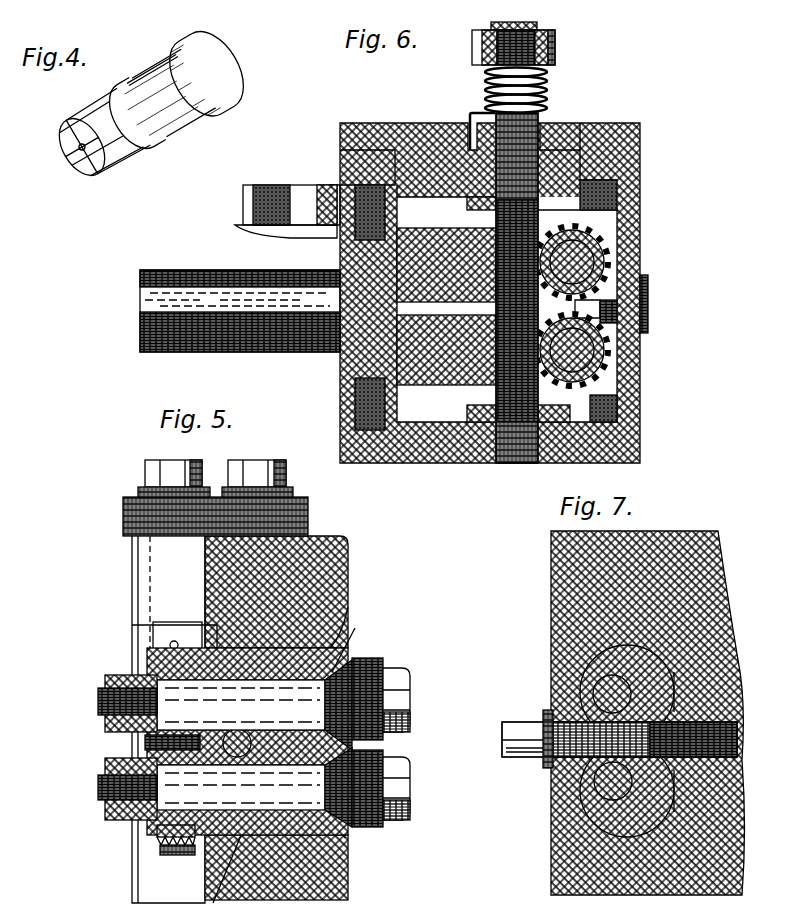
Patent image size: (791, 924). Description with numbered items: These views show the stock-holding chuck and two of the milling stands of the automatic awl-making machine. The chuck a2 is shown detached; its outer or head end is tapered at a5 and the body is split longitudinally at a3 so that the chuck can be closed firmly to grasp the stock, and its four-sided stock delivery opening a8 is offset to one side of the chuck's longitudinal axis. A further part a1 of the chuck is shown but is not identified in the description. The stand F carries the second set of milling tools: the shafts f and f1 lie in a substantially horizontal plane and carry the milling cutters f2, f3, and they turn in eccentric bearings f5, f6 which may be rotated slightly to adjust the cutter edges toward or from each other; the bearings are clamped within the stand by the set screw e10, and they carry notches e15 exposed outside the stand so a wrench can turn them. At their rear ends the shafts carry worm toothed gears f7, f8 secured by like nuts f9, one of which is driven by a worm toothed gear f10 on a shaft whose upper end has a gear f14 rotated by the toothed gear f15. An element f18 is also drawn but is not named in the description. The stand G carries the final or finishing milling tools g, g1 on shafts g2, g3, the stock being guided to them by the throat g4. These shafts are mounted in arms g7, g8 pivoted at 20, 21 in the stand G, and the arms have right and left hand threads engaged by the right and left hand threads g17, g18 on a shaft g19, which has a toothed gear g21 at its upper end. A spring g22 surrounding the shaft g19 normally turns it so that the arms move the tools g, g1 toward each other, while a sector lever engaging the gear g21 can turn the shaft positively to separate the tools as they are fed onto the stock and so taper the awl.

In FIG. 4, the collet head a1 is at (240, 68).
In FIG. 4, the chuck a2 is at (85, 102).
In FIG. 4, the longitudinal split a3 is at (97, 103).
In FIG. 4, the tapered head end a5 is at (115, 157).
In FIG. 4, the stock delivery opening a8 is at (67, 163).
In FIG. 6, the stand G is at (438, 124).
In FIG. 6, the milling tool g is at (612, 283).
In FIG. 6, the milling tool g1 is at (617, 323).
In FIG. 6, the shaft g2 is at (607, 248).
In FIG. 6, the shaft g3 is at (597, 348).
In FIG. 6, the throat g4 is at (628, 300).
In FIG. 6, the arm g7 is at (430, 232).
In FIG. 6, the arm g8 is at (446, 365).
In FIG. 6, the right hand thread g17 is at (481, 213).
In FIG. 6, the left hand thread g18 is at (516, 403).
In FIG. 6, the shaft g19 is at (527, 145).
In FIG. 6, the toothed gear g21 is at (557, 42).
In FIG. 6, the spring g22 is at (547, 88).
In FIG. 6, the pivot 20 is at (342, 264).
In FIG. 6, the pivot 21 is at (343, 370).
In FIG. 5, the stand F is at (355, 552).
In FIG. 7, the stand F is at (558, 578).
In FIG. 5, the shaft f is at (348, 853).
In FIG. 7, the shaft f is at (590, 790).
In FIG. 5, the shaft f1 is at (100, 710).
In FIG. 7, the shaft f1 is at (590, 667).
In FIG. 5, the milling cutter f2 is at (372, 663).
In FIG. 5, the milling cutter f3 is at (380, 823).
In FIG. 5, the eccentric bearing f5 is at (157, 672).
In FIG. 7, the eccentric bearing f5 is at (580, 677).
In FIG. 5, the eccentric bearing f6 is at (213, 903).
In FIG. 7, the eccentric bearing f6 is at (598, 800).
In FIG. 5, the worm toothed gear f7 is at (160, 653).
In FIG. 5, the worm toothed gear f8 is at (160, 825).
In FIG. 5, the nut f9 is at (105, 677).
In FIG. 5, the worm toothed gear f10 is at (123, 735).
In FIG. 5, the gear f14 is at (127, 497).
In FIG. 5, the toothed gear f15 is at (307, 517).
In FIG. 5, the ratchet f18 is at (105, 820).
In FIG. 5, the set screw e10 is at (350, 740).
In FIG. 7, the set screw e10 is at (517, 722).
In FIG. 7, the notches e15 is at (673, 697).